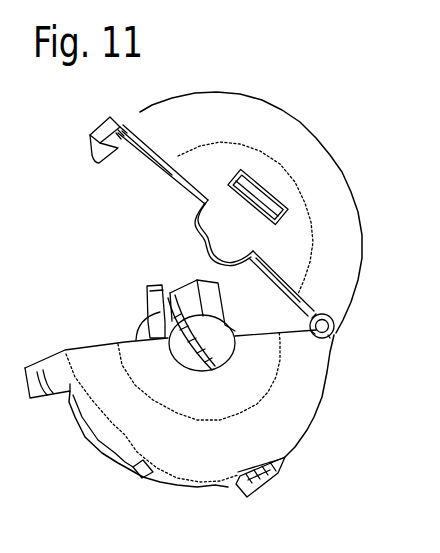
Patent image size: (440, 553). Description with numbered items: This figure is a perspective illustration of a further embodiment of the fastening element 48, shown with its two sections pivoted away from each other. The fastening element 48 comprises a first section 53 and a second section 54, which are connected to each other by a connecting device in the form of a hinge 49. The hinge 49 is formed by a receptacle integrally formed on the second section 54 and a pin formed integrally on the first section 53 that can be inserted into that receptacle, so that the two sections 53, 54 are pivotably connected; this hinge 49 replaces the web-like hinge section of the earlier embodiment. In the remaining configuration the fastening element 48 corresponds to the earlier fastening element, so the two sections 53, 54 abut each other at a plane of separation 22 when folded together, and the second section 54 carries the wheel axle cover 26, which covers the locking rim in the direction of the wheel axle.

The fastening element 48 is at (350, 115).
The second section 54 is at (277, 128).
The first section 53 is at (283, 407).
The plane of separation 22 is at (84, 345).
The wheel axle cover 26 is at (210, 218).
The hinge 49 is at (350, 338).